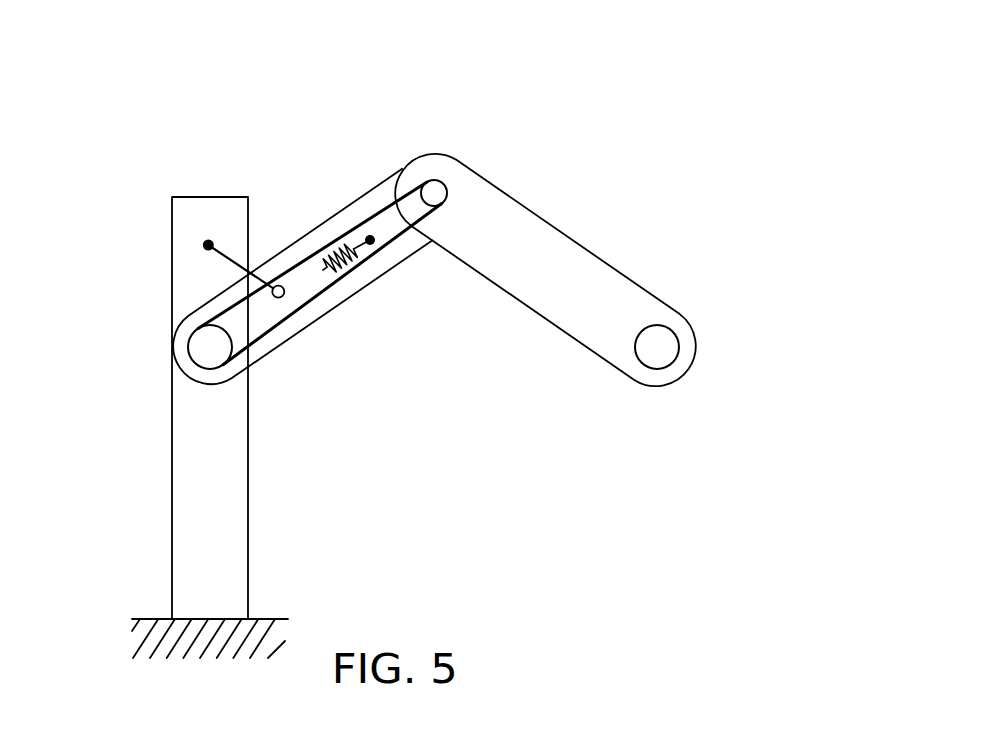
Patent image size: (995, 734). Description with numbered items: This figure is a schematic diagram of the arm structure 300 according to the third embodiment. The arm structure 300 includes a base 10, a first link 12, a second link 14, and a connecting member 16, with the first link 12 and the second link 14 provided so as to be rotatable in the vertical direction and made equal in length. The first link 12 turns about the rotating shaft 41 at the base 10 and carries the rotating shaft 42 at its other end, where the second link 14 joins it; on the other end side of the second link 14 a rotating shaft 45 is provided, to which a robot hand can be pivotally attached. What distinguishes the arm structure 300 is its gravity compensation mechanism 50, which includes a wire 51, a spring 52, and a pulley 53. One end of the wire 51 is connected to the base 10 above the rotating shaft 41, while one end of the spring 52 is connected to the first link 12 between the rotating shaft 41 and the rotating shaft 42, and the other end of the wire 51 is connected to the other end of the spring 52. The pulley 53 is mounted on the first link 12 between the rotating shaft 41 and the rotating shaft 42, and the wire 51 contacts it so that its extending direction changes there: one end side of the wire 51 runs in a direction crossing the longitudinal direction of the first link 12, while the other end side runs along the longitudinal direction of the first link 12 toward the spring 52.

The arm structure 300 is at (624, 102).
The base 10 is at (207, 216).
The first link 12 is at (390, 188).
The second link 14 is at (547, 238).
The rotating shaft 41 is at (198, 342).
The rotating shaft 42 is at (436, 188).
The rotating shaft 45 is at (657, 340).
The connecting member 16 is at (348, 277).
The spring 52 is at (345, 243).
The wire 51 is at (232, 261).
The gravity compensation mechanism 50 is at (277, 307).
The pulley 53 is at (282, 297).